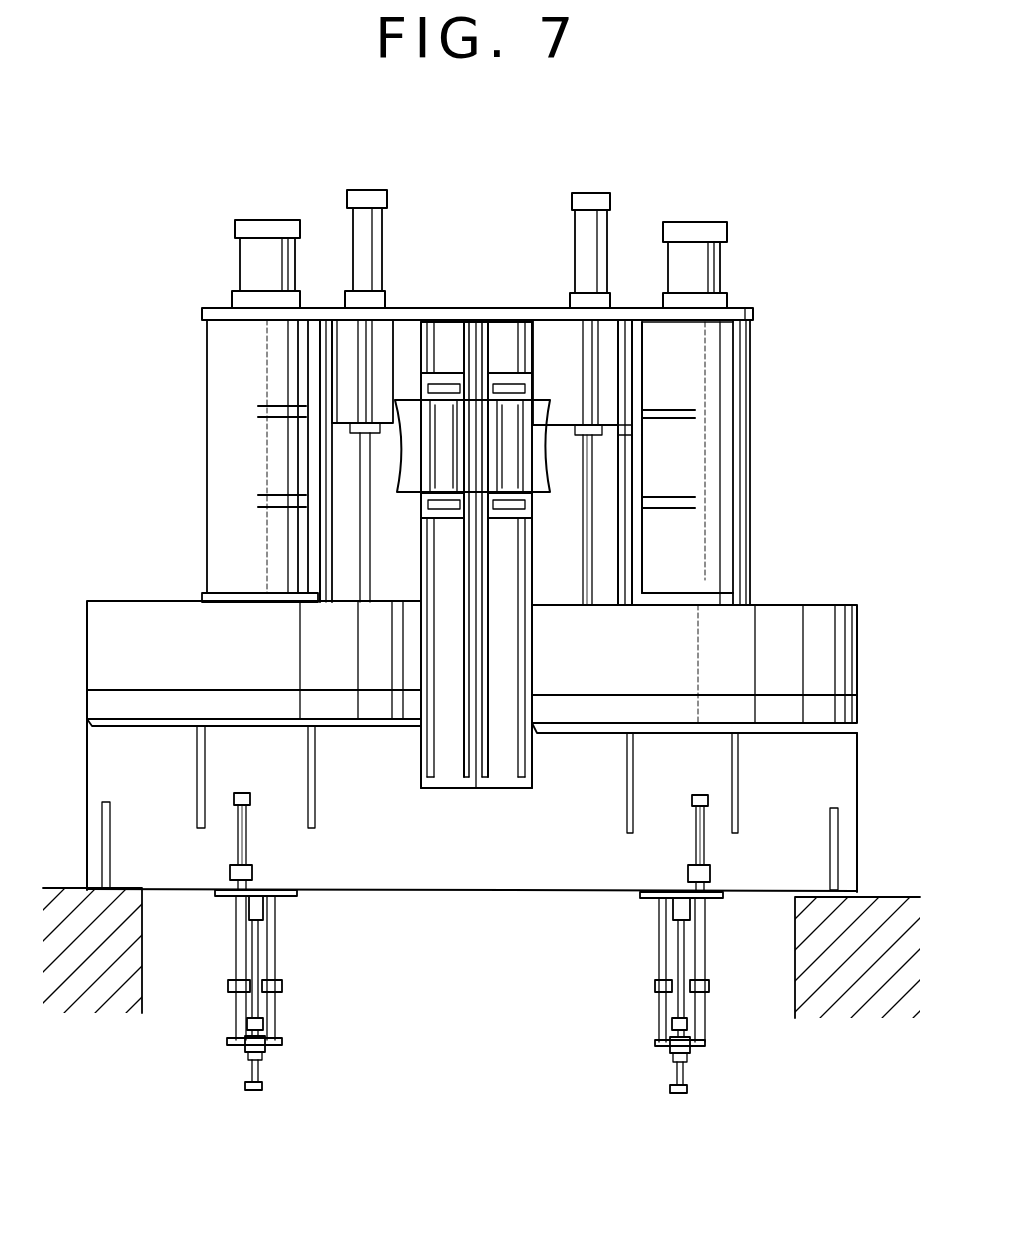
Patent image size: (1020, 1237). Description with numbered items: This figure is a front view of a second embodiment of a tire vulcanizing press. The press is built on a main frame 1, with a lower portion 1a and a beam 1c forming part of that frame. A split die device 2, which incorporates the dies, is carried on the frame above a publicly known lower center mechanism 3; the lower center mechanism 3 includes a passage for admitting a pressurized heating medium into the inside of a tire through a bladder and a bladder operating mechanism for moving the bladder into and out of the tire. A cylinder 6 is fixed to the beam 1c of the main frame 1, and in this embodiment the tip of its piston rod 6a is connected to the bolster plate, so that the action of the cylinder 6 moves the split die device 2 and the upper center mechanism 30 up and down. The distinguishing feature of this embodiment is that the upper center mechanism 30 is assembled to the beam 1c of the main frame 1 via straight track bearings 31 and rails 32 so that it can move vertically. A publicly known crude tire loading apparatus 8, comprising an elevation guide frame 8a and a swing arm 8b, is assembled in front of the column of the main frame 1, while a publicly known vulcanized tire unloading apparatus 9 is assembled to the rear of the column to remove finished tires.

The main frame 1 is at (440, 850).
The base side wall 1a is at (845, 810).
The beam 1c is at (557, 337).
The split die device 2 is at (857, 667).
The lower center mechanism 3 is at (662, 925).
The cylinder 6 is at (583, 240).
The piston rod 6a is at (592, 575).
The crude tire loading apparatus 8 is at (103, 345).
The elevation guide frame 8a is at (510, 555).
The swing arm 8b is at (540, 470).
The vulcanized tire unloading apparatus 9 is at (697, 200).
The upper center mechanism 30 is at (745, 505).
The straight track bearings 31 is at (620, 413).
The rails 32 is at (632, 358).